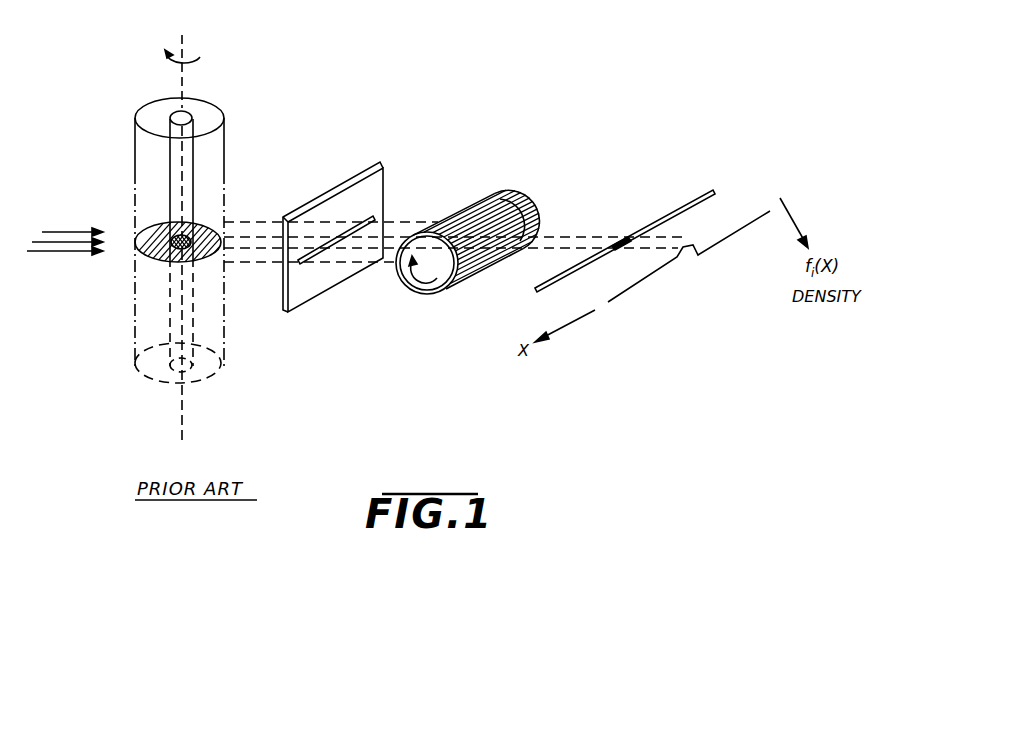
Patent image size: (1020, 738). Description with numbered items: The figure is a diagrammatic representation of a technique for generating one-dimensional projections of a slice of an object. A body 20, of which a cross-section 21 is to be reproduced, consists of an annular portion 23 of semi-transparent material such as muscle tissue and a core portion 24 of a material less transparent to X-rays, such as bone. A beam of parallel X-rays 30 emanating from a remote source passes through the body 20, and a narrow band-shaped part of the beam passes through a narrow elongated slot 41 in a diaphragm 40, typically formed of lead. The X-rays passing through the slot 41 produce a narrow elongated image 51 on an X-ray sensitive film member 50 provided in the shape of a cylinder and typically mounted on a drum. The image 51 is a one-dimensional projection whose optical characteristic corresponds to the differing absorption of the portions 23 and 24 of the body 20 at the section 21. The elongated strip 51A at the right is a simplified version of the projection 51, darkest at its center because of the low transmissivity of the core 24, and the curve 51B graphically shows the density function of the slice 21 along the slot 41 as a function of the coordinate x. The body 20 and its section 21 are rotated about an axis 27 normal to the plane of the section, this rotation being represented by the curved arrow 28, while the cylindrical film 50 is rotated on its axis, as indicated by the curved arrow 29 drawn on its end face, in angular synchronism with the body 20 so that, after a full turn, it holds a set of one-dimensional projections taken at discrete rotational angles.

The body 20 is at (205, 90).
The cross-section 21 is at (147, 260).
The annular portion 23 is at (213, 117).
The core portion 24 is at (170, 118).
The axis 27 is at (183, 45).
The curved arrow 28 is at (167, 56).
The rotation of drum 29 is at (418, 283).
The beam of parallel X-rays 30 is at (54, 230).
The diaphragm 40 is at (380, 182).
The slot 41 is at (372, 220).
The X-ray sensitive film member 50 is at (523, 193).
The image 51 is at (468, 212).
The elongated strip 51A is at (682, 207).
The curve 51B is at (750, 220).